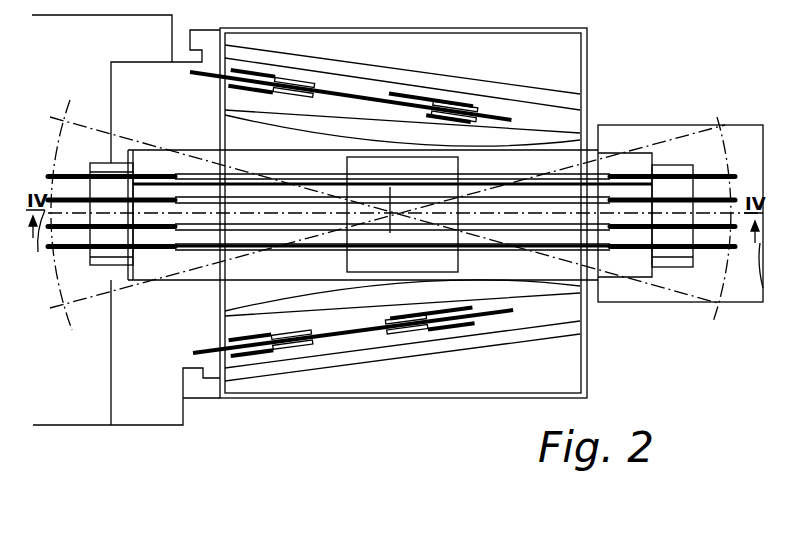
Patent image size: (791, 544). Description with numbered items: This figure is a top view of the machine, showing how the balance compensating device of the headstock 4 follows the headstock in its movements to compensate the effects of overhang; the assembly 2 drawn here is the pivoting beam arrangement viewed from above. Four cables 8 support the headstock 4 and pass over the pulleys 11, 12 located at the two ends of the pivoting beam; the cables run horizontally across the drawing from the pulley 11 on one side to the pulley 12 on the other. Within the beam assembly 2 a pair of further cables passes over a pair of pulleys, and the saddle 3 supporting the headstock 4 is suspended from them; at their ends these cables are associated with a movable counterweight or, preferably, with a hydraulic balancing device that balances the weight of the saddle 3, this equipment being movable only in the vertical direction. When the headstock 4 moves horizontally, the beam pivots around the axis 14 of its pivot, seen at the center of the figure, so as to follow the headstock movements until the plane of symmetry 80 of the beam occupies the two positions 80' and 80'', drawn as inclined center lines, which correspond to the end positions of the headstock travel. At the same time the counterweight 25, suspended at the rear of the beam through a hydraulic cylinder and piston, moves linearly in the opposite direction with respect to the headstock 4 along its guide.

The housing 2 is at (205, 32).
The saddle 3 is at (135, 78).
The headstock 4 is at (68, 378).
The cables 8 is at (250, 190).
The pulley 11 is at (72, 253).
The pulley 12 is at (712, 256).
The axis 14 is at (393, 218).
The counterweight 25 is at (745, 302).
The plane of symmetry 80 is at (378, 215).
The end position of plane of symmetry 80' is at (374, 191).
The end position of plane of symmetry 80'' is at (376, 235).